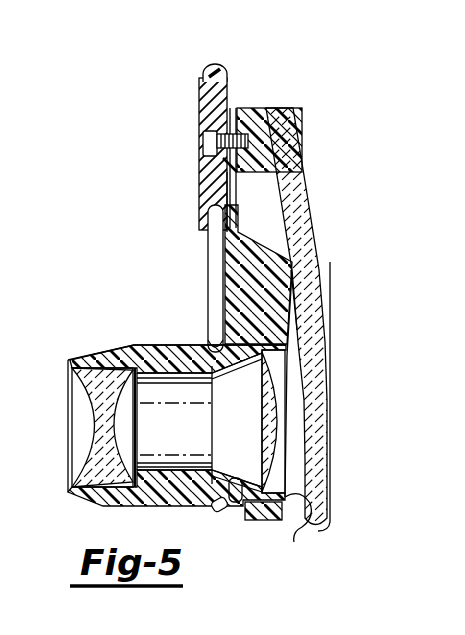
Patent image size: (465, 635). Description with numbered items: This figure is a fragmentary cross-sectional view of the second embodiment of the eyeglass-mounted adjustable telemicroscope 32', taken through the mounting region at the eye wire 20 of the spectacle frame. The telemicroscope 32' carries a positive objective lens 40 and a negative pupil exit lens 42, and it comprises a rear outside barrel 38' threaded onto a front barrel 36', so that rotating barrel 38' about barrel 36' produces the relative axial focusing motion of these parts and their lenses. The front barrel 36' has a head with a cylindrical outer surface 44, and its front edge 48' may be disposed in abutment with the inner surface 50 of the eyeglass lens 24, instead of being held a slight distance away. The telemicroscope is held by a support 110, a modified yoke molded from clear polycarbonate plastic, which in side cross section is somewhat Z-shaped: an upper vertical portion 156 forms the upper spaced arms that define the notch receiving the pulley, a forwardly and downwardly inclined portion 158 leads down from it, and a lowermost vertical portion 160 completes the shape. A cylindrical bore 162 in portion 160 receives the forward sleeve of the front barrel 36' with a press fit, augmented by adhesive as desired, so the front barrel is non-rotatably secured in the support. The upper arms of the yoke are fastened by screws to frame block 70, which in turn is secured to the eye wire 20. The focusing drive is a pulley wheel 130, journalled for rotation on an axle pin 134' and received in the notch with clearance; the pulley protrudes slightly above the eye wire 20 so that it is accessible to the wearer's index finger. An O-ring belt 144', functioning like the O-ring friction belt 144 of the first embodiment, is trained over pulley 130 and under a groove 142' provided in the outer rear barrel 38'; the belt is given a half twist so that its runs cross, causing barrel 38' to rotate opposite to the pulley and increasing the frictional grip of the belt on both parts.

The eye wire 20 is at (274, 110).
The left hand lens 24 is at (305, 233).
The adjustable telemicroscope 32' is at (164, 405).
The front barrel 36' is at (337, 382).
The rear outside barrel 38' is at (164, 504).
The positive objective lens 40 is at (263, 414).
The negative pupil exit lens 42 is at (83, 393).
The cylindrical outer surface 44 is at (290, 268).
The front edge 48' is at (303, 535).
The inner surface 50 is at (307, 449).
The frame block 70 is at (234, 107).
The yoke 110 is at (236, 233).
The pulley wheel 130 is at (198, 88).
The axle pin 134' is at (187, 143).
The groove 142' is at (185, 329).
The O-ring friction belt 144 is at (236, 56).
The O-ring belt 144' is at (189, 373).
The upper vertical portion 156 is at (203, 172).
The forwardly and downwardly inclined portion 158 is at (237, 229).
The lowermost vertical portion 160 is at (248, 522).
The cylindrical bore 162 is at (223, 513).